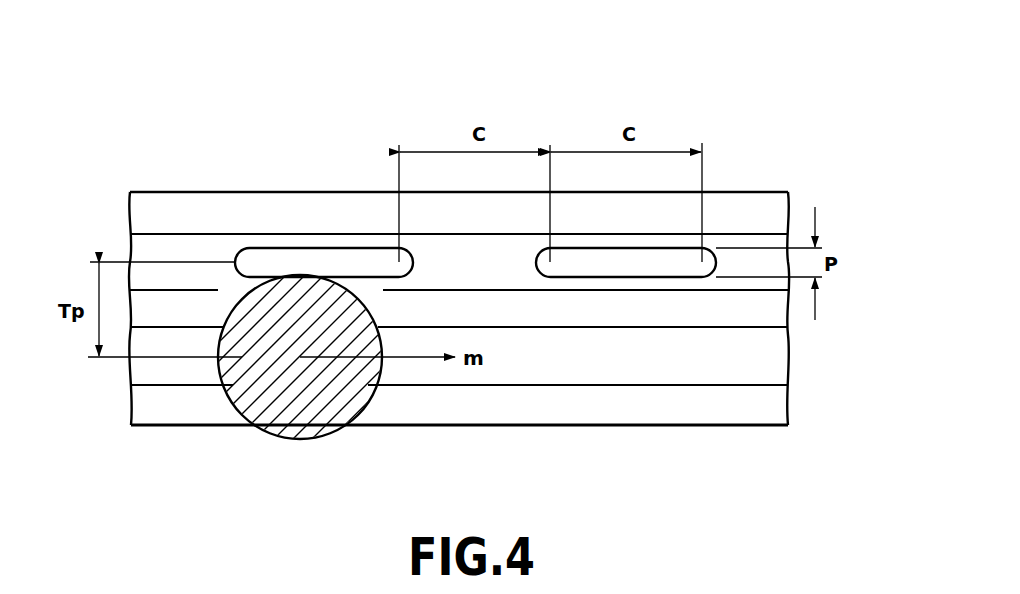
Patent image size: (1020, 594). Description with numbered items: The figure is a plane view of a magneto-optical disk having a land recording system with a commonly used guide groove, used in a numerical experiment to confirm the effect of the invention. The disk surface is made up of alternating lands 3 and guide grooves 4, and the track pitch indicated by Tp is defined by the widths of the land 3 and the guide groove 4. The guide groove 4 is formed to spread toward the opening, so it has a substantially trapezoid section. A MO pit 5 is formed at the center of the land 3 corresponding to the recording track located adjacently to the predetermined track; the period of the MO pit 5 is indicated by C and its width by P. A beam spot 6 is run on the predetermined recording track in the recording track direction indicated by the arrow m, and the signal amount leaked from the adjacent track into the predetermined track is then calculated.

The land 3 is at (190, 243).
The guide groove 4 is at (610, 329).
The MO pit 5 is at (682, 262).
The beam spot 6 is at (282, 431).